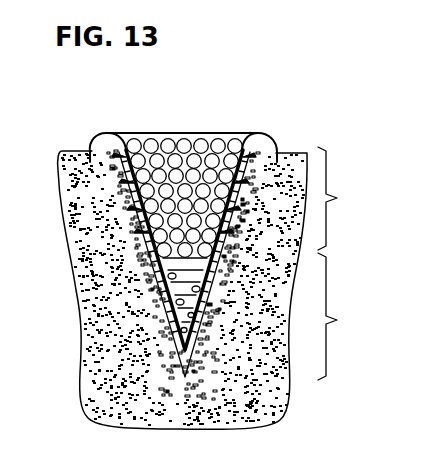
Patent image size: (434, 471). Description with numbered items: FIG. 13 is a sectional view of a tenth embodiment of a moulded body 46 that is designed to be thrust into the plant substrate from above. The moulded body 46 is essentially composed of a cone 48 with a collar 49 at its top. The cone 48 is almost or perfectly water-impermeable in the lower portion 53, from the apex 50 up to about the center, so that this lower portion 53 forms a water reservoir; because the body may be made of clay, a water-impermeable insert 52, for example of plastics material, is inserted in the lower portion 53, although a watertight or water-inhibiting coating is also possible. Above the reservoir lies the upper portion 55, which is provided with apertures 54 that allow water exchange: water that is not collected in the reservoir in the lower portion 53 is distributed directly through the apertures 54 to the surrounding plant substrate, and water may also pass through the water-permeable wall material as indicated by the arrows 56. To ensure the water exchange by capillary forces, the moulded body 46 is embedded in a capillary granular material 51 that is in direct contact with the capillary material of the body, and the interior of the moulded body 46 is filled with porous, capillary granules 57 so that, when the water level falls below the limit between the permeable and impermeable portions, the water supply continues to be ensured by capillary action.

The moulded body 46 is at (325, 133).
The cone 48 is at (138, 142).
The collar 49 is at (255, 147).
The apex 50 is at (185, 362).
The capillary granular material 51 is at (137, 258).
The water-impermeable insert 52 is at (213, 347).
The lower portion 53 is at (376, 316).
The apertures 54 is at (133, 193).
The upper portion 55 is at (376, 198).
The arrows 56 is at (117, 190).
The porous capillary granules 57 is at (188, 147).